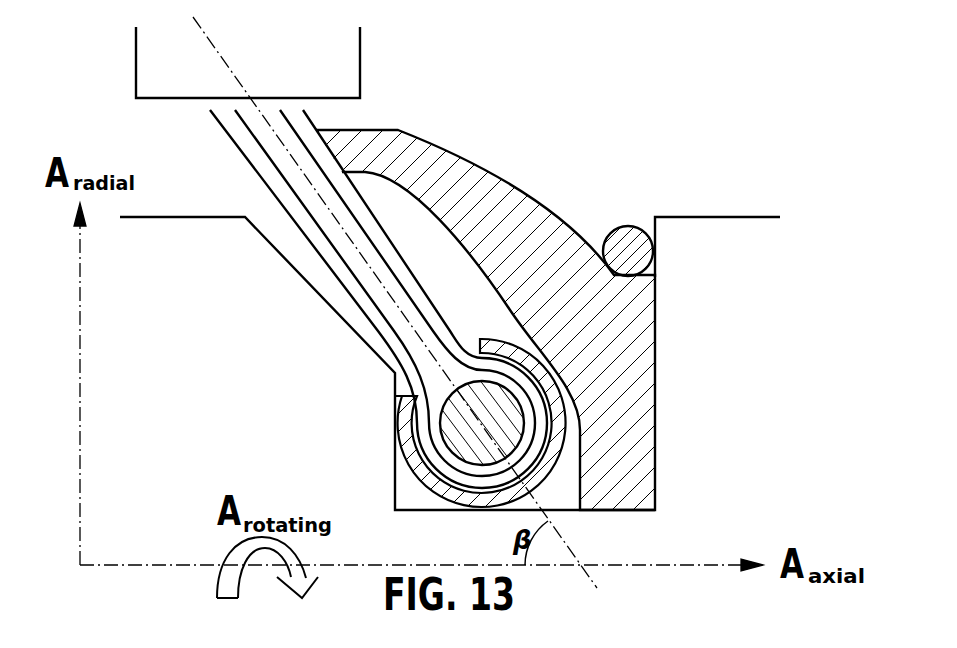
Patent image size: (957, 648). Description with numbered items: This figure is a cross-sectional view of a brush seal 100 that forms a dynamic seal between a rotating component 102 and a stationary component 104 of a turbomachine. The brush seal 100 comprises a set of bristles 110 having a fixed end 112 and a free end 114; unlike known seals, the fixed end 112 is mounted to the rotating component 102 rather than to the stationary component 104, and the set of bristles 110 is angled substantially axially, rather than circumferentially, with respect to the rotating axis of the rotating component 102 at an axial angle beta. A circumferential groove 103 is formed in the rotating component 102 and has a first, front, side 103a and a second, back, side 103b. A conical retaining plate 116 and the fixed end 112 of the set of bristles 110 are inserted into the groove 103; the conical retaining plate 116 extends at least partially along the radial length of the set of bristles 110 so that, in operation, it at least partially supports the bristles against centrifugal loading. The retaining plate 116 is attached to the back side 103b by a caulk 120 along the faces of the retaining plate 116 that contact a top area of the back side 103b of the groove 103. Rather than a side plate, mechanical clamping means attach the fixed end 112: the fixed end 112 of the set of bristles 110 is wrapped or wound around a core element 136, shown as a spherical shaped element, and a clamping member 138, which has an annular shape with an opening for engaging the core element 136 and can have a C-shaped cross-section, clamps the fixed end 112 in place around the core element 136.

The brush seal 100 is at (112, 137).
The rotating component 102 is at (185, 255).
The circumferential groove 103 is at (468, 130).
The first, front, side 103a is at (272, 234).
The second, back, side 103b is at (645, 396).
The stationary component 104 is at (282, 66).
The set of bristles 110 is at (335, 286).
The fixed end 112 is at (400, 384).
The free end 114 is at (210, 132).
The conical retaining plate 116 is at (608, 335).
The caulk 120 is at (630, 243).
The core element 136 is at (462, 427).
The clamping member 138 is at (447, 486).